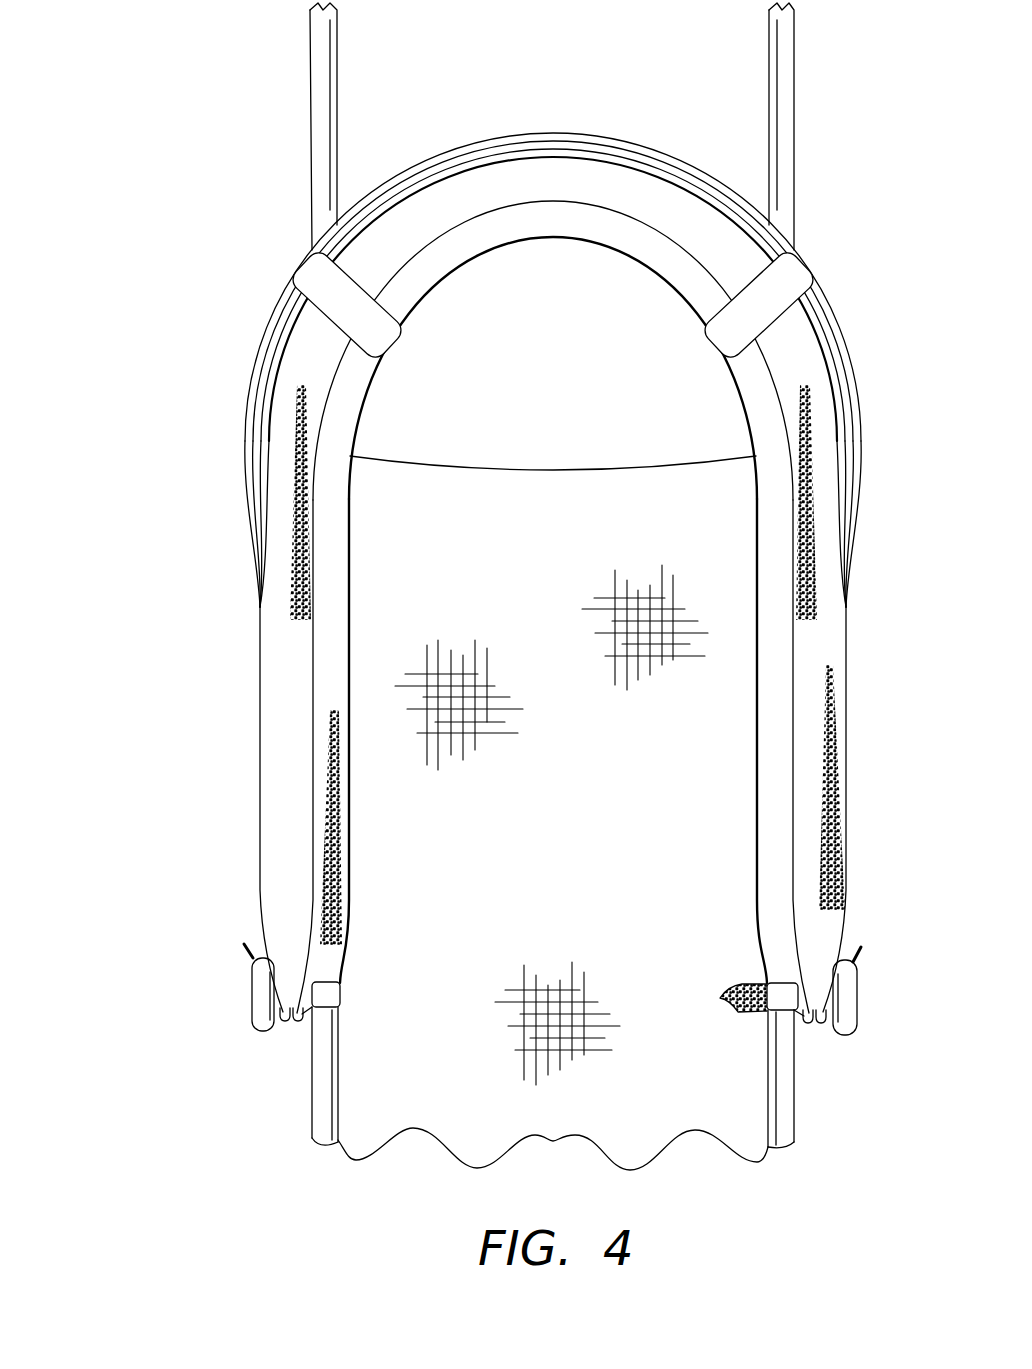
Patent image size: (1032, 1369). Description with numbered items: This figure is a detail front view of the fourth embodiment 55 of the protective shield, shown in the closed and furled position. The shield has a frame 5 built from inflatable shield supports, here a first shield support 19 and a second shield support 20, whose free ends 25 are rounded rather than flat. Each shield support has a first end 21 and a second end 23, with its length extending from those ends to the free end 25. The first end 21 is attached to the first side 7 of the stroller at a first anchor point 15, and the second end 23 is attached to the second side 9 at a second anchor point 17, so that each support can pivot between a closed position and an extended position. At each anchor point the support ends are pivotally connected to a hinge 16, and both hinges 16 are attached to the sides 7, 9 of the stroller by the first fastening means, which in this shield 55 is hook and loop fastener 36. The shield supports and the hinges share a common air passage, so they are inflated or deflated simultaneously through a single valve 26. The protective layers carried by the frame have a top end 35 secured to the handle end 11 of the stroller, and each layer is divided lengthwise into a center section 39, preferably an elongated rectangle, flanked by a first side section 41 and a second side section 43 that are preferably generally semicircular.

The frame 5 is at (242, 799).
The first side 7 is at (323, 1113).
The second side 9 is at (788, 1122).
The handle end 11 is at (318, 125).
The first anchor point 15 is at (283, 1018).
The hinge 16 is at (253, 1012).
The second anchor point 17 is at (820, 1027).
The first shield support 19 is at (273, 693).
The second shield support 20 is at (343, 622).
The first end 21 is at (300, 1020).
The second end 23 is at (812, 1023).
The free end 25 is at (553, 347).
The valve 26 is at (253, 960).
The top end 35 is at (513, 135).
The hook and loop fastener 36 is at (385, 345).
The center section 39 is at (475, 268).
The first side section 41 is at (341, 548).
The second side section 43 is at (553, 770).
The fourth embodiment 55 is at (152, 557).